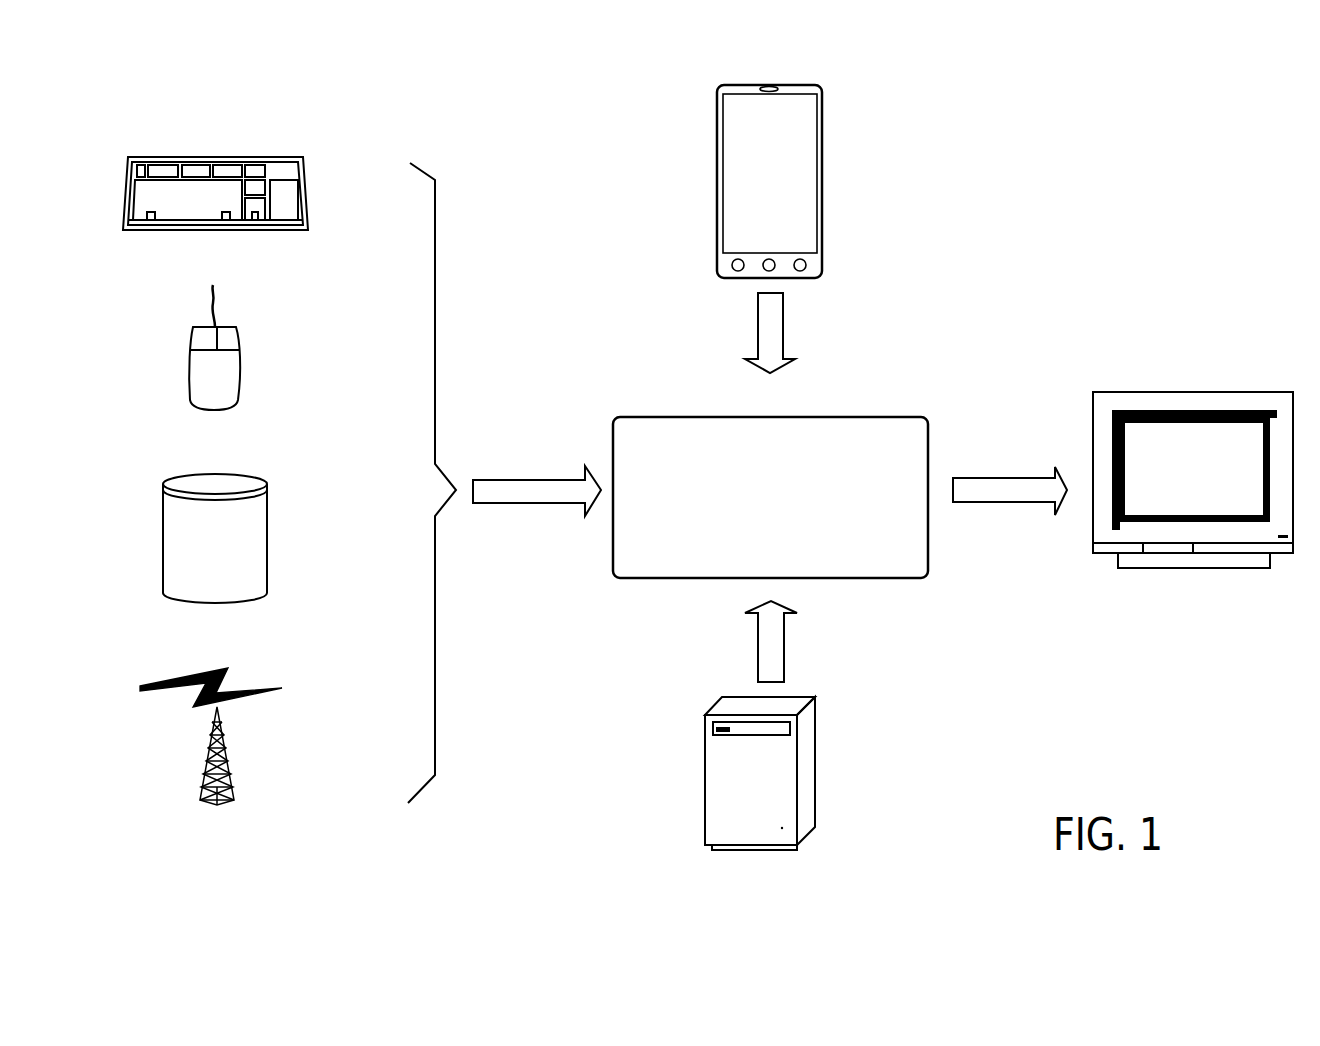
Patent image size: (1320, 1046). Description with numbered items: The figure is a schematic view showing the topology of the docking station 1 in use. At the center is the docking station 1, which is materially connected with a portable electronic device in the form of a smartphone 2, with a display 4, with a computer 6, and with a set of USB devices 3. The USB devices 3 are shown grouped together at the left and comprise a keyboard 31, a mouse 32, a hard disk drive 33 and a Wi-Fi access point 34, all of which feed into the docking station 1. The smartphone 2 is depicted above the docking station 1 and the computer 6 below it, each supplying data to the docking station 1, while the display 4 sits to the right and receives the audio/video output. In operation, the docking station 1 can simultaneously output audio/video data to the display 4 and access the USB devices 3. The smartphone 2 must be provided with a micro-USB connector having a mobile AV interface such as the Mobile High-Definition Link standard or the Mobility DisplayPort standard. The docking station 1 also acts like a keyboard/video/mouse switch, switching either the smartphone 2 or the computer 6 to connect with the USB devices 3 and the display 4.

The docking station 1 is at (855, 382).
The smartphone 2 is at (823, 222).
The USB devices 3 is at (312, 118).
The keyboard 31 is at (308, 190).
The mouse 32 is at (243, 367).
The hard disk drive 33 is at (268, 520).
The Wi-Fi access point 34 is at (240, 690).
The display 4 is at (1127, 573).
The computer 6 is at (815, 750).